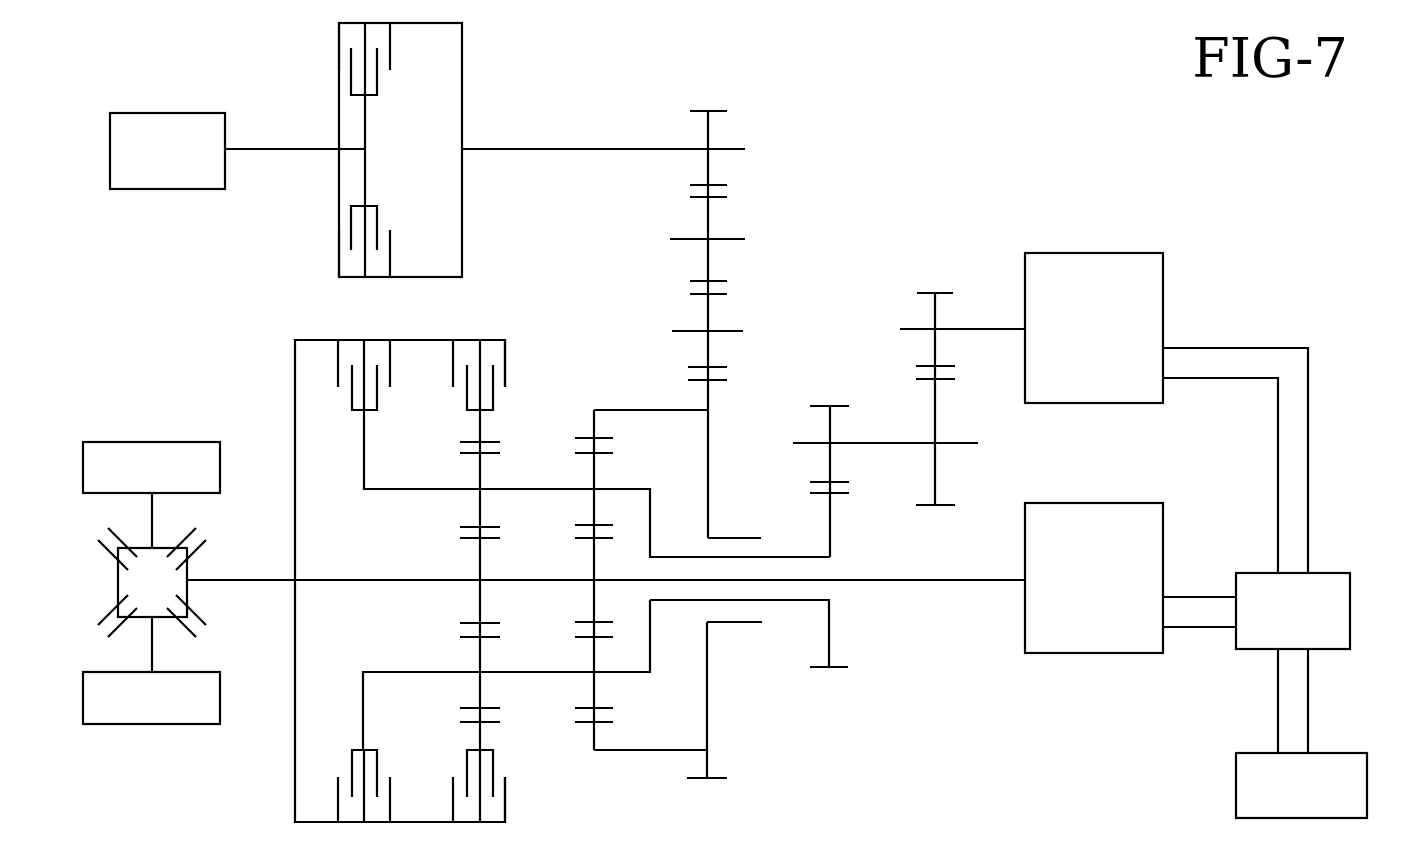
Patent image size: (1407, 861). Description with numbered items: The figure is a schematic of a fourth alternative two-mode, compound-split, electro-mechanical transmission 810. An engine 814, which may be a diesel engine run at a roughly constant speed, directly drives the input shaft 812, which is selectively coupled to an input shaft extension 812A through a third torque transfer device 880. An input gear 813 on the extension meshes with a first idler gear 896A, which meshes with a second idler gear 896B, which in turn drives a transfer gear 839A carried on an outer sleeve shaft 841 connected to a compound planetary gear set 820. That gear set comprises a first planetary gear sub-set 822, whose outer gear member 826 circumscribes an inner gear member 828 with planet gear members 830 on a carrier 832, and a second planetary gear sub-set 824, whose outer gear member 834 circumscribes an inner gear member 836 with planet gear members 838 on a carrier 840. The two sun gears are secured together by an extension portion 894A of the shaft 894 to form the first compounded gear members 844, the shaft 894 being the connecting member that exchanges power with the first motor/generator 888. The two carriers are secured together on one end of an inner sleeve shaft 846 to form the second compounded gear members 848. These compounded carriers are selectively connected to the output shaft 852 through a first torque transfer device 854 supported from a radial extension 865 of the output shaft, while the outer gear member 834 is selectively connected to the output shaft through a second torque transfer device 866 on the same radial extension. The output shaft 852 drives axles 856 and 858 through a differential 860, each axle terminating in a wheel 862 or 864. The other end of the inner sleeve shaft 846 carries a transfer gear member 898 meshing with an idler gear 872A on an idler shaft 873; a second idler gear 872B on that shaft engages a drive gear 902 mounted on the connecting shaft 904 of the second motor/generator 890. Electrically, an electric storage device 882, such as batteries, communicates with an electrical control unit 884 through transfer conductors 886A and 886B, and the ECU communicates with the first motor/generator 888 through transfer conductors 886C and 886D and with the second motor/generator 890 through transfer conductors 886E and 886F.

The two-mode, compound-split, electro-mechanical transmission 810 is at (932, 148).
The input shaft 812 is at (270, 149).
The input shaft extension 812A is at (558, 149).
The input gear 813 is at (710, 126).
The engine 814 is at (143, 165).
The compound planetary gear set 820 is at (522, 745).
The first planetary gear sub-set 822 is at (583, 732).
The second planetary gear sub-set 824 is at (511, 397).
The outer gear member 826 is at (596, 427).
The inner gear member 828 is at (594, 560).
The planet gear members 830 is at (594, 508).
The carrier 832 is at (652, 497).
The outer gear member 834 is at (480, 427).
The inner gear member 836 is at (480, 560).
The planet gear members 838 is at (480, 508).
The transfer gear 839A is at (709, 762).
The carrier 840 is at (363, 690).
The outer sleeve shaft 841 is at (742, 538).
The first compounded gear members 844 is at (508, 583).
The inner sleeve shaft 846 is at (783, 602).
The second compounded gear members 848 is at (553, 486).
The output shaft 852 is at (248, 580).
The first torque transfer device 854 is at (358, 343).
The axle 856 is at (152, 513).
The axle 858 is at (152, 650).
The differential 860 is at (115, 590).
The wheel 862 is at (128, 482).
The wheel 864 is at (128, 712).
The radial extension 865 is at (295, 377).
The second torque transfer device 866 is at (452, 787).
The idler gear 872A is at (830, 427).
The second idler gear 872B is at (937, 463).
The idler shaft 873 is at (897, 443).
The third torque transfer device 880 is at (336, 50).
The electric storage device 882 is at (1276, 800).
The electrical control unit 884 is at (1269, 625).
The transfer conductor 886A is at (1308, 710).
The transfer conductor 886B is at (1278, 730).
The transfer conductor 886C is at (1207, 597).
The transfer conductor 886D is at (1200, 627).
The transfer conductor 886E is at (1222, 378).
The transfer conductor 886F is at (1245, 348).
The first motor/generator 888 is at (1069, 592).
The second motor/generator 890 is at (1069, 342).
The shaft 894 is at (975, 580).
The extension portion 894A is at (537, 582).
The first idler gear 896A is at (710, 216).
The second idler gear 896B is at (710, 311).
The transfer gear member 898 is at (831, 643).
The drive gear 902 is at (935, 312).
The connecting shaft 904 is at (983, 329).